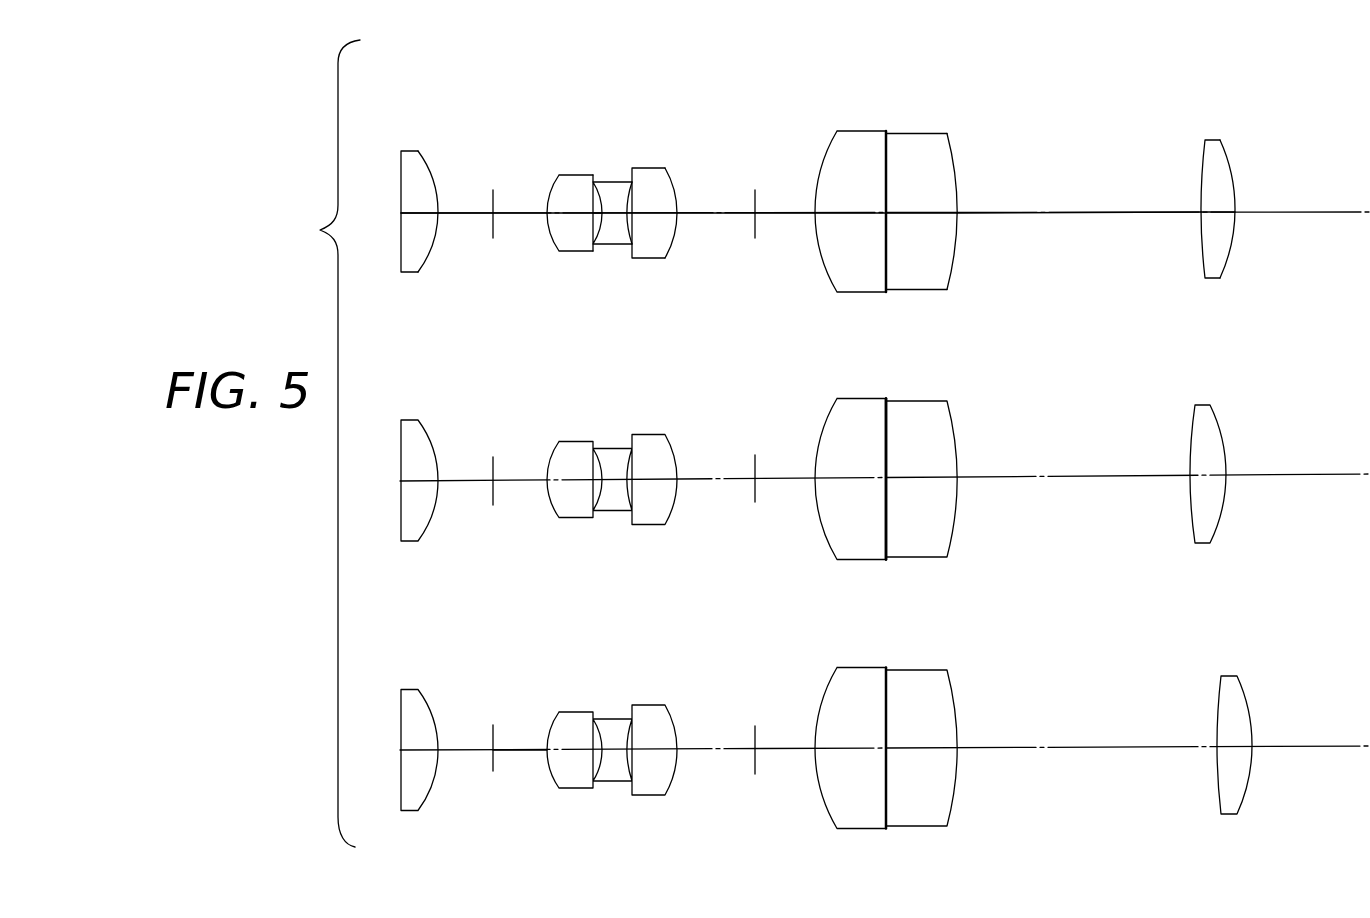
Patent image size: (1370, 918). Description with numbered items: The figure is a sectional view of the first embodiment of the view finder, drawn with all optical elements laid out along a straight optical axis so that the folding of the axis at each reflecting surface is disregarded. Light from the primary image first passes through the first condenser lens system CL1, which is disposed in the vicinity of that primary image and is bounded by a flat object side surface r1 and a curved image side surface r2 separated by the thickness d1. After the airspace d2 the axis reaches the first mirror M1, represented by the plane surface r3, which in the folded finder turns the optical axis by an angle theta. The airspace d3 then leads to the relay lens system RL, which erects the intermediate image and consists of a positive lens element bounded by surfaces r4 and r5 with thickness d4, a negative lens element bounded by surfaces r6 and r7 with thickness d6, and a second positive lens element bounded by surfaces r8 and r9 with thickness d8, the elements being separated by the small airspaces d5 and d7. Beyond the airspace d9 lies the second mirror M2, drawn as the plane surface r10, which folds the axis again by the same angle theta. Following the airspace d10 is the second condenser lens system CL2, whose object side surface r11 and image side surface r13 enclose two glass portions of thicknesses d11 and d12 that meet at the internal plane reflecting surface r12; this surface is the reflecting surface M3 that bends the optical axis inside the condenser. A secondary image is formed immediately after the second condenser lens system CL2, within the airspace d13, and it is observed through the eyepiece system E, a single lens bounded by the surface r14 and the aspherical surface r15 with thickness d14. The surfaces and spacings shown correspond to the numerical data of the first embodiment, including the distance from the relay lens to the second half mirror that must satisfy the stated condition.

The object side surface of first condenser lens system r1 is at (400, 172).
The image side surface of first condenser lens system r2 is at (432, 177).
The first mirror r3 is at (492, 198).
The object side surface of positive lens element of relay lens system r4 is at (551, 190).
The image side surface of positive lens element of relay lens system r5 is at (599, 196).
The object side surface of negative lens element of relay lens system r6 is at (603, 186).
The image side surface of negative lens element of relay lens system r7 is at (625, 190).
The object side surface of second positive lens element of relay lens system r8 is at (634, 190).
The image side surface of second positive lens element of relay lens system r9 is at (673, 186).
The second mirror r10 is at (755, 196).
The object side surface of second condenser lens system r11 is at (829, 148).
The reflecting surface in second condenser lens system r12 is at (885, 152).
The image side surface of second condenser lens system r13 is at (953, 160).
The object side surface of eyepiece lens system r14 is at (1203, 166).
The image side surface of eyepiece lens system r15 is at (1229, 165).
The thickness of first condenser lens d1 is at (416, 215).
The airspace between first condenser lens and first mirror d2 is at (453, 215).
The airspace between first mirror and relay lens system d3 is at (508, 215).
The thickness of first positive relay lens element d4 is at (563, 215).
The airspace between first positive and negative relay lens elements d5 is at (596, 215).
The thickness of negative relay lens element d6 is at (615, 215).
The airspace between negative and second positive relay lens elements d7 is at (628, 215).
The thickness of second positive relay lens element d8 is at (653, 215).
The airspace between relay lens system and second mirror d9 is at (713, 215).
The airspace between second mirror and second condenser lens system d10 is at (782, 215).
The thickness of first part of second condenser lens system d11 is at (841, 215).
The thickness of second part of second condenser lens system d12 is at (915, 215).
The airspace between second condenser lens system and eyepiece d13 is at (1047, 215).
The thickness of eyepiece lens d14 is at (1217, 215).
The first condenser lens system CL1 is at (404, 545).
The first mirror M1 is at (493, 471).
The relay lens system RL is at (672, 552).
The second mirror M2 is at (755, 462).
The second condenser lens system CL2 is at (963, 577).
The reflecting surface M3 is at (886, 417).
The eyepiece system E is at (1203, 545).